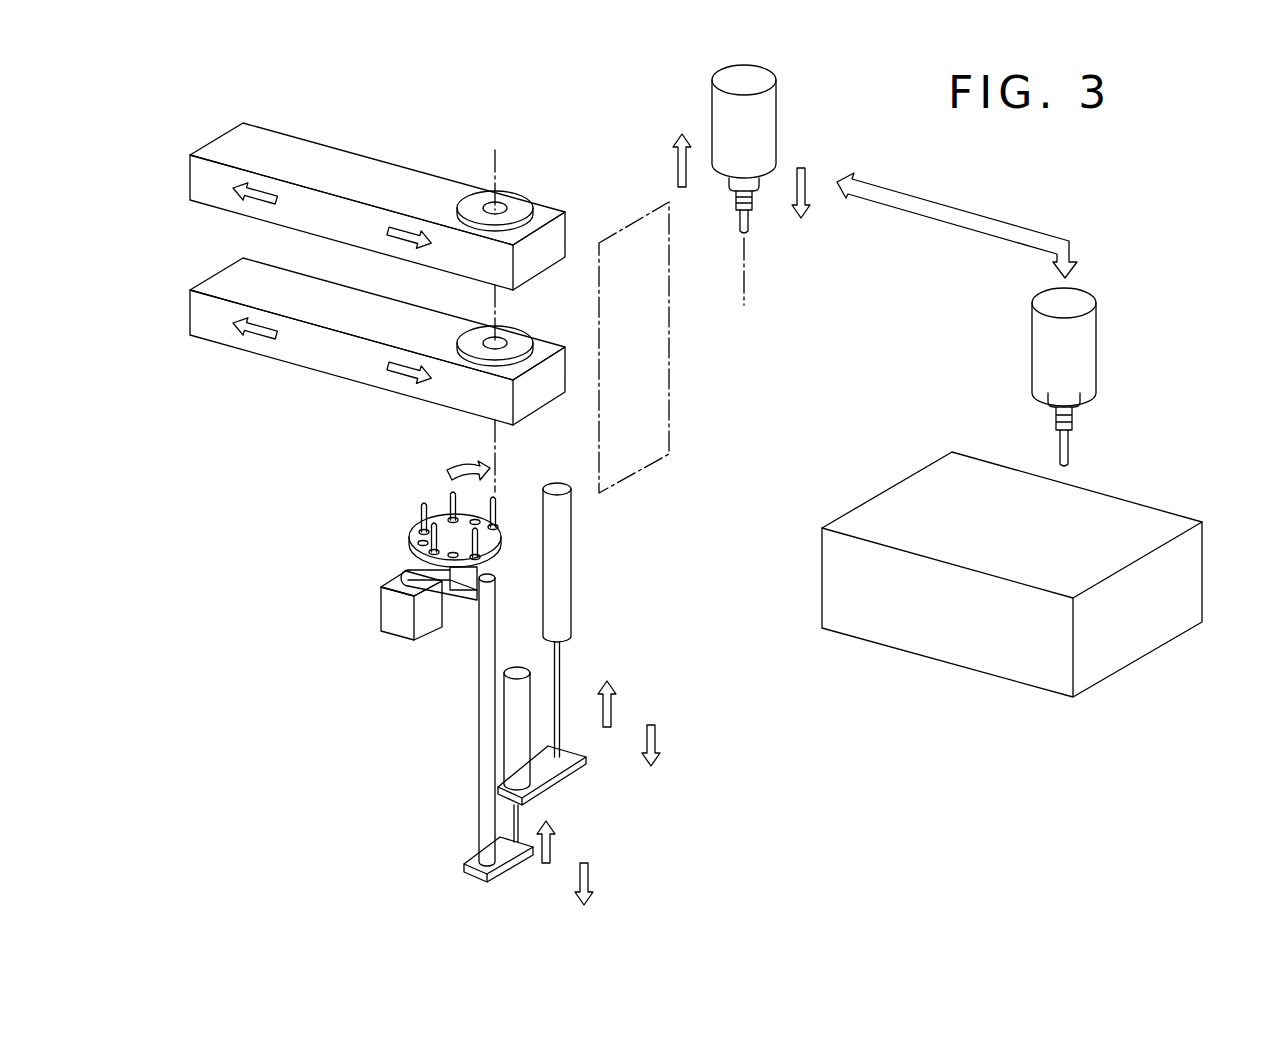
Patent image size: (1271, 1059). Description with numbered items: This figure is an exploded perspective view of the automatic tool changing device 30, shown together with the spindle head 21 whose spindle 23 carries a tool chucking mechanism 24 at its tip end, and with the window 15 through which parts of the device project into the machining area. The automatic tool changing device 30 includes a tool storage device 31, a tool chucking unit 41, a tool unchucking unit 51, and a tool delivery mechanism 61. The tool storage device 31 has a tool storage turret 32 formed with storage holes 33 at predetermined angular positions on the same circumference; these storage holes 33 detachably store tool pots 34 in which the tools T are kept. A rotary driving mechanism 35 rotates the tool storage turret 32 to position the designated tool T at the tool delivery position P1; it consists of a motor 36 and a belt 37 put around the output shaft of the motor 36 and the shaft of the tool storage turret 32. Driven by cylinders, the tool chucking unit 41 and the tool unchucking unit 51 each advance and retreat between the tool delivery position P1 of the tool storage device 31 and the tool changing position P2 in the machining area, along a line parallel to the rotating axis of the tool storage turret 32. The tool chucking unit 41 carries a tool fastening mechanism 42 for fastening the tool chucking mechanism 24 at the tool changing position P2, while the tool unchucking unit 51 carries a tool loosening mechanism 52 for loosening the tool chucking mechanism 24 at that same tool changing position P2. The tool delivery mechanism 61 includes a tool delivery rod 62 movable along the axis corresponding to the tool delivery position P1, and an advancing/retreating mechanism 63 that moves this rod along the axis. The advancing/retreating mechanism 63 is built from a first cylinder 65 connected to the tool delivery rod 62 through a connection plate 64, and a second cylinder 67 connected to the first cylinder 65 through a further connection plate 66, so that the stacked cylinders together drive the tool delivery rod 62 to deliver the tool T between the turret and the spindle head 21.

The window 15 is at (669, 395).
The spindle head 21 is at (771, 104).
The spindle 23 is at (762, 190).
The tool chucking mechanism 24 is at (742, 198).
The tool T is at (752, 240).
The tool delivery position P1 is at (495, 306).
The tool changing position P2 is at (746, 291).
The automatic tool changing device 30 is at (245, 590).
The tool storage device 31 is at (378, 604).
The tool storage turret 32 is at (412, 533).
The storage holes 33 is at (420, 545).
The tool pots 34 is at (420, 532).
The rotary driving mechanism 35 is at (404, 659).
The motor 36 is at (390, 632).
The belt 37 is at (463, 596).
The tool chucking unit 41 is at (205, 330).
The tool fastening mechanism 42 is at (515, 337).
The tool unchucking unit 51 is at (205, 196).
The tool loosening mechanism 52 is at (515, 201).
The tool delivery mechanism 61 is at (481, 753).
The tool delivery rod 62 is at (480, 812).
The advancing/retreating mechanism 63 is at (609, 636).
The connection plate 64 is at (500, 869).
The first cylinder 65 is at (528, 695).
The connection plate 66 is at (566, 775).
The second cylinder 67 is at (572, 586).